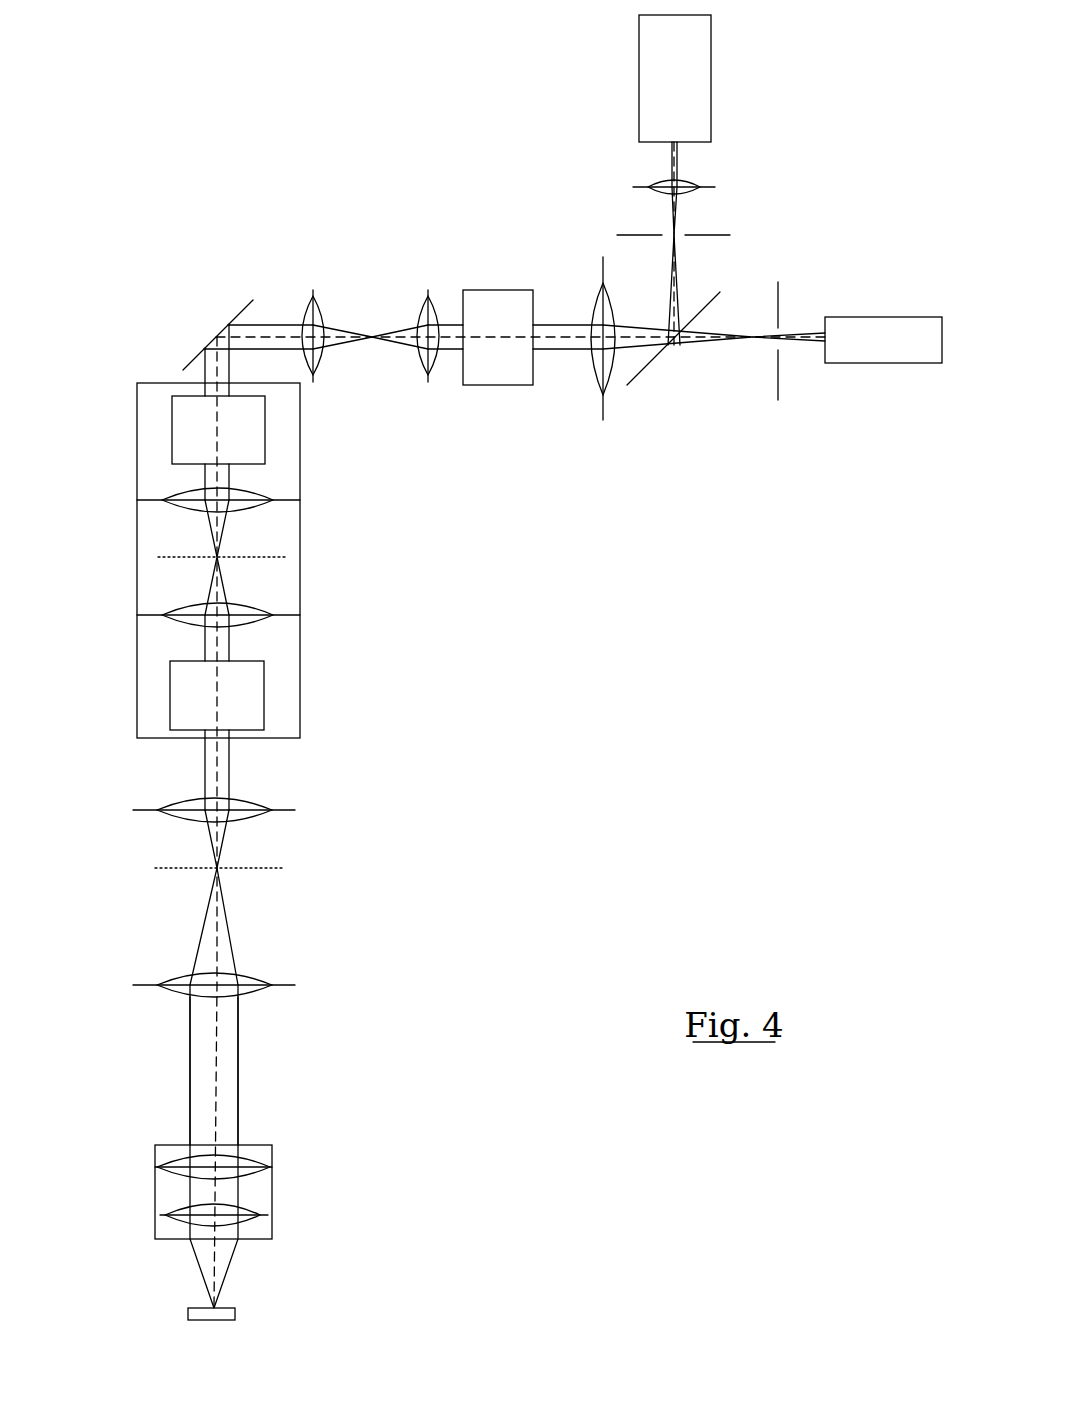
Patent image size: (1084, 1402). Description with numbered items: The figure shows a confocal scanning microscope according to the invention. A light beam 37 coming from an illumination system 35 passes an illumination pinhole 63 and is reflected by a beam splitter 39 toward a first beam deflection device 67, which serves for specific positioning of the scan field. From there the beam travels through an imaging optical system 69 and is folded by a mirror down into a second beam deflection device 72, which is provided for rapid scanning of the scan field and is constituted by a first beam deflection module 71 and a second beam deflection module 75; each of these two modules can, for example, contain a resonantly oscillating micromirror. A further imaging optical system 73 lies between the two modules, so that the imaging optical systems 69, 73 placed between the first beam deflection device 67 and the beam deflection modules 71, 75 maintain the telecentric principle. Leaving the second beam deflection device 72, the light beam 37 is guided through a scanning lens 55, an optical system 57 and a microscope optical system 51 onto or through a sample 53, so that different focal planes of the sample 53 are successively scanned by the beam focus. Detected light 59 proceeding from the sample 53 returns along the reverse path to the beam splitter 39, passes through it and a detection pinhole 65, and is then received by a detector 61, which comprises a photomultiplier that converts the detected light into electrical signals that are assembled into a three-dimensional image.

The illumination system 35 is at (689, 80).
The illumination pinhole 63 is at (717, 235).
The detector 61 is at (873, 328).
The detection pinhole 65 is at (778, 373).
The beam splitter 39 is at (638, 373).
The first beam deflection device 67 is at (487, 360).
The imaging optical system 69 is at (417, 287).
The first beam deflection module 71 is at (185, 438).
The second beam deflection device 72 is at (273, 677).
The imaging optical system 73 is at (280, 520).
The second beam deflection module 75 is at (185, 692).
The scanning lens 55 is at (252, 810).
The optical system 57 is at (250, 985).
The light beam 37 is at (225, 1052).
The detected light 59 is at (108, 1098).
The microscope optical system 51 is at (263, 1187).
The sample 53 is at (218, 1315).